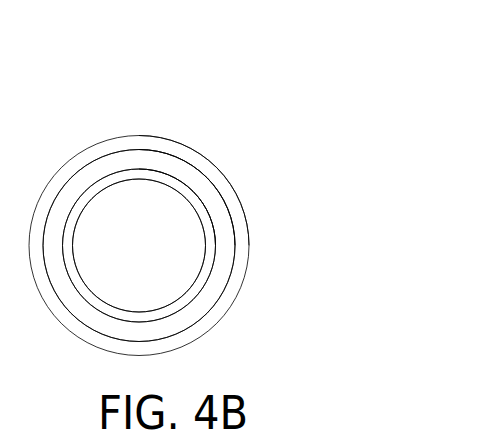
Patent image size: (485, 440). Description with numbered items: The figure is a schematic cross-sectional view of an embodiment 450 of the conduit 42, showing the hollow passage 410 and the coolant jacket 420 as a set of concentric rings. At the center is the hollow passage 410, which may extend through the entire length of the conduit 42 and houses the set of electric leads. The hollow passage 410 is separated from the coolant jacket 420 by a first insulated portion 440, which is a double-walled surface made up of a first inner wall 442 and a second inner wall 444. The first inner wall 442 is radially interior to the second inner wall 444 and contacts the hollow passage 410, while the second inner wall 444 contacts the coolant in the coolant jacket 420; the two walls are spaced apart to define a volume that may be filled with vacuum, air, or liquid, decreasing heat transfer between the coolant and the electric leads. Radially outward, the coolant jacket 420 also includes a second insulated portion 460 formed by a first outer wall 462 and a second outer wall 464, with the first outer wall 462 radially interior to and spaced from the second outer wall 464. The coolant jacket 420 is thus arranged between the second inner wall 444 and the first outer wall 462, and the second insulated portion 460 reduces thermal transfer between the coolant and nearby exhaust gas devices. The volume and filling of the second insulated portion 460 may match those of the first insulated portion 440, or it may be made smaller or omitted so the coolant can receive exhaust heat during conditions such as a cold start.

The conduit 42 is at (239, 184).
The hollow passage 410 is at (153, 250).
The coolant jacket 420 is at (174, 165).
The first insulated portion 440 is at (216, 238).
The first inner wall 442 is at (174, 187).
The second inner wall 444 is at (216, 238).
The embodiment of the hollow passage and coolant jacket 450 is at (235, 79).
The second insulated portion 460 is at (240, 237).
The first outer wall 462 is at (232, 265).
The second outer wall 464 is at (240, 290).